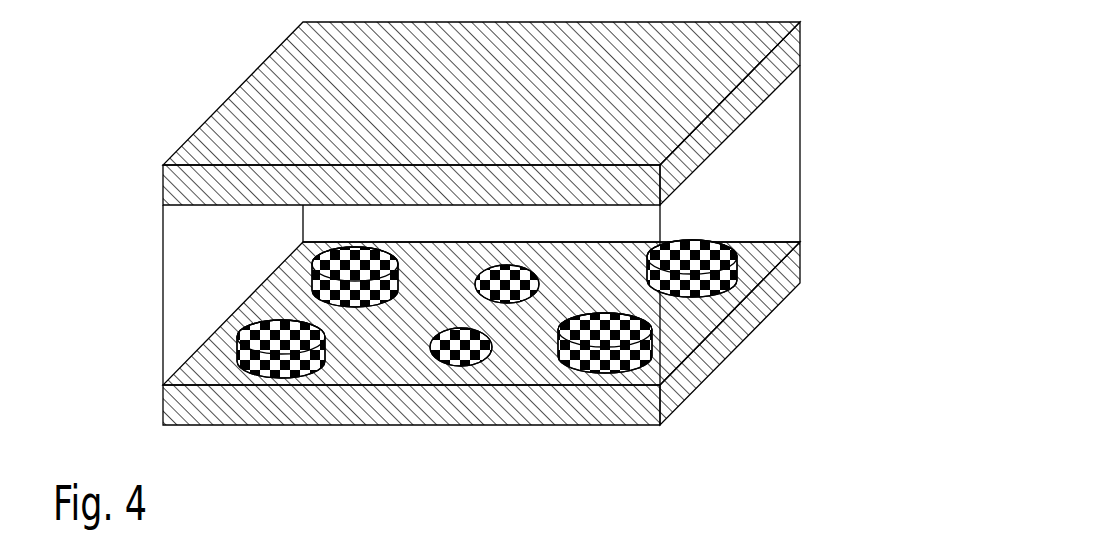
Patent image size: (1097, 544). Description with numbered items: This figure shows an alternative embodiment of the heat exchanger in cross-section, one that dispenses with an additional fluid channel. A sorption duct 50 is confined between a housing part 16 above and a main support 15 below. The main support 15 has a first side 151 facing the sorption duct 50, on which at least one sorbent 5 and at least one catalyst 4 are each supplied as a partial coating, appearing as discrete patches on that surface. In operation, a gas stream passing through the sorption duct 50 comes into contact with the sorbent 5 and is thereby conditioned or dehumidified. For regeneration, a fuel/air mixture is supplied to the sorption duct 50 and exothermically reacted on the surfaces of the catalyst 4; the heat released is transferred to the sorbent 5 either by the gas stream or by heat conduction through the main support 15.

The housing part 16 is at (802, 50).
The sorption duct 50 is at (788, 165).
The main support 15 is at (800, 275).
The first side 151 is at (275, 292).
The catalyst 4 is at (460, 367).
The sorbent 5 is at (605, 373).